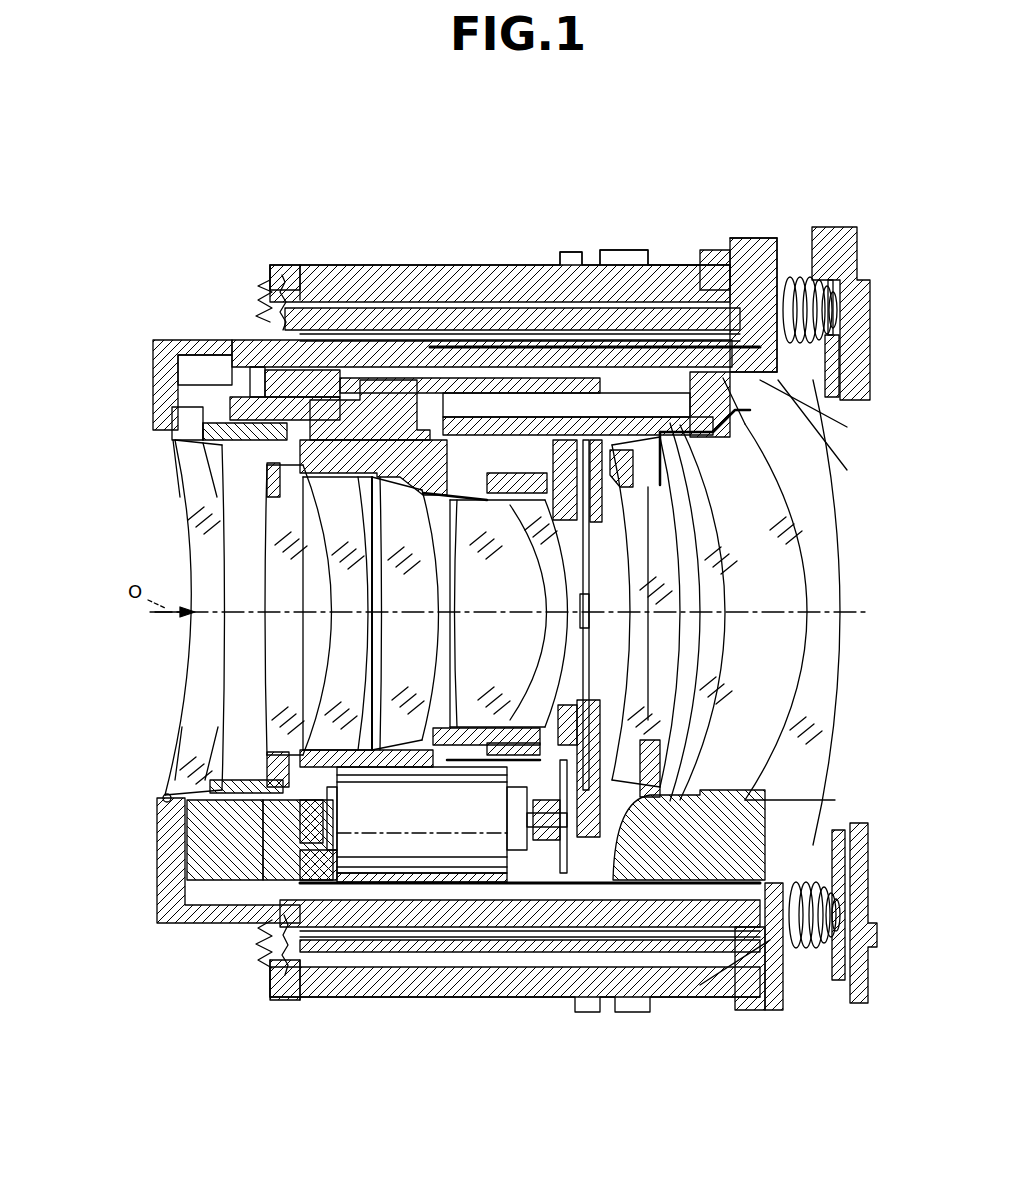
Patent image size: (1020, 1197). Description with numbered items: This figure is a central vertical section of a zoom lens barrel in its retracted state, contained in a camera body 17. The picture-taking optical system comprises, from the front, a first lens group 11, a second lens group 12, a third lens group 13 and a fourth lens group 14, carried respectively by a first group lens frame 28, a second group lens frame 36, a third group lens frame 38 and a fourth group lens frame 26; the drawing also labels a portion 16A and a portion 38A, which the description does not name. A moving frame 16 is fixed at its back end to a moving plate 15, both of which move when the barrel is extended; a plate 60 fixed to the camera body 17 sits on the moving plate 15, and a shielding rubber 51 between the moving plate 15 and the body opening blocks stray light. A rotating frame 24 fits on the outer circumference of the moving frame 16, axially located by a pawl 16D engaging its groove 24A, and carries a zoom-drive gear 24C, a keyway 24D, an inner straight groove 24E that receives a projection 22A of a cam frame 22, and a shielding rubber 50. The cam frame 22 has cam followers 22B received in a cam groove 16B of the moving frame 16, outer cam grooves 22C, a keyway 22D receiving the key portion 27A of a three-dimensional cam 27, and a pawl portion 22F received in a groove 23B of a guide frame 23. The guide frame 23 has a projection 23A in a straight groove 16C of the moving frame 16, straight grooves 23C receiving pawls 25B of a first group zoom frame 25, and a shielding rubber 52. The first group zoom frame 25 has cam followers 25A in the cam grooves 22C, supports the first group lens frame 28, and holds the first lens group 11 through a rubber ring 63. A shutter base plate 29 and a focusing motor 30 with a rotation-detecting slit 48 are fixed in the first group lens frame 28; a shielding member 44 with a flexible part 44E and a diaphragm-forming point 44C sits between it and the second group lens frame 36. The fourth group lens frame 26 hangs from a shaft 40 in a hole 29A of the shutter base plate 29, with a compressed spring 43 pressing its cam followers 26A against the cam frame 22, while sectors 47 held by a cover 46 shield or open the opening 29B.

The first lens group 11 is at (198, 690).
The second lens group 12 is at (397, 640).
The third lens group 13 is at (470, 577).
The fourth lens group 14 is at (648, 712).
The moving plate 15 is at (780, 300).
The moving frame 16 is at (718, 290).
The front flange 16A is at (225, 378).
The cam groove 16B is at (773, 373).
The straight groove 16C is at (752, 1000).
The pawl 16D is at (275, 263).
The camera body 17 is at (858, 252).
The cam frame 22 is at (700, 330).
The projection 22A is at (742, 300).
The cam followers 22B is at (772, 300).
The cam grooves 22C is at (537, 372).
The keyway 22D is at (468, 333).
The pawl portion 22F is at (790, 430).
The guide frame 23 is at (506, 318).
The projection 23A is at (752, 1010).
The groove 23B is at (780, 400).
The straight grooves 23C is at (398, 325).
The rotating frame 24 is at (680, 300).
The groove 24A is at (302, 267).
The gear 24C is at (622, 300).
The keyway 24D is at (612, 300).
The straight groove 24E is at (556, 265).
The first group zoom frame 25 is at (165, 345).
The cam followers 25A is at (560, 420).
The pawls 25B is at (590, 258).
The fourth group lens frame 26 is at (750, 857).
The cam followers 26A is at (365, 960).
The three-dimensional cam 27 is at (300, 392).
The key portion 27A is at (438, 355).
The first group lens frame 28 is at (210, 860).
The shutter base plate 29 is at (568, 800).
The hole 29A is at (650, 320).
The opening 29B is at (600, 545).
The focusing motor 30 is at (443, 830).
The second group lens frame 36 is at (357, 440).
The third group lens frame 38 is at (415, 445).
The lens holding frame flange 38A is at (235, 420).
The shaft 40 is at (700, 452).
The compressed spring 43 is at (700, 510).
The shielding member 44 is at (218, 458).
The point 44C is at (270, 468).
The flexible part 44E is at (233, 485).
The cover 46 is at (595, 710).
The sector 47 is at (588, 625).
The slit 48 is at (800, 782).
The shielding rubber 50 is at (257, 313).
The shielding rubber 51 is at (795, 280).
The shielding rubber 52 is at (258, 318).
The plate 60 is at (850, 292).
The rubber ring 63 is at (163, 798).